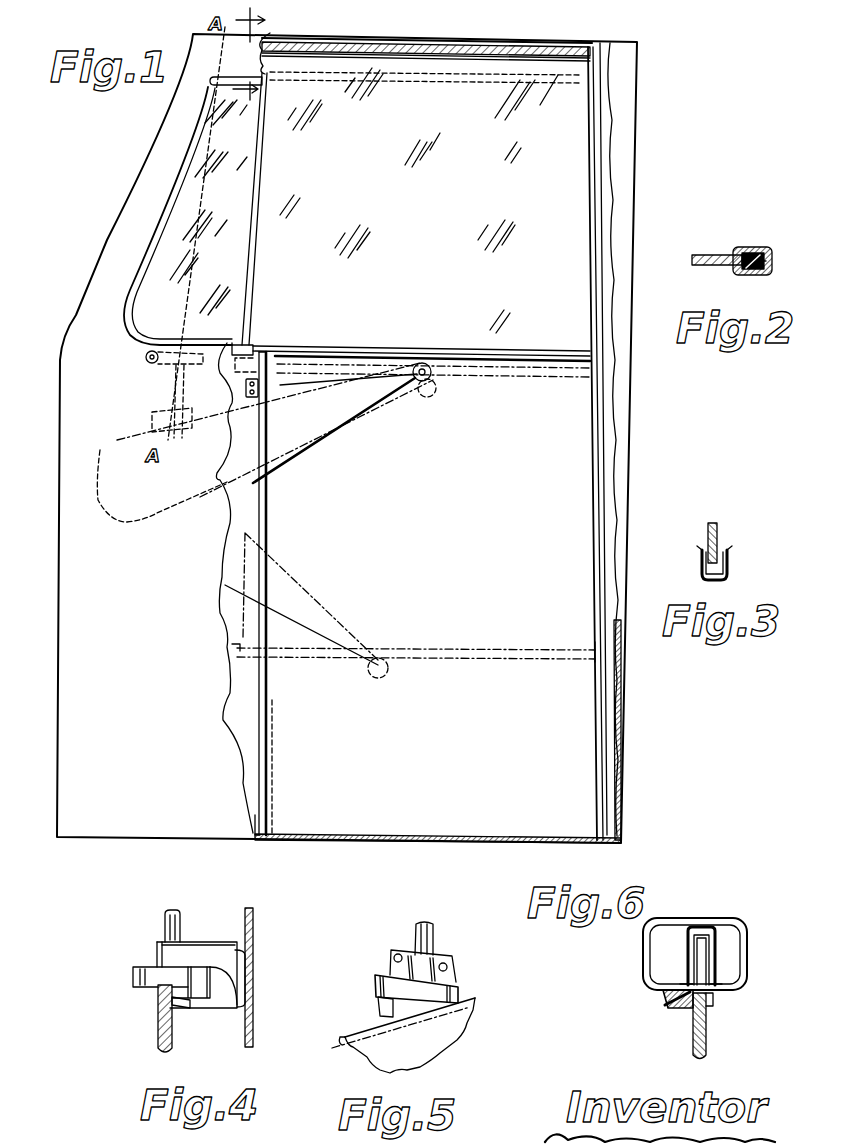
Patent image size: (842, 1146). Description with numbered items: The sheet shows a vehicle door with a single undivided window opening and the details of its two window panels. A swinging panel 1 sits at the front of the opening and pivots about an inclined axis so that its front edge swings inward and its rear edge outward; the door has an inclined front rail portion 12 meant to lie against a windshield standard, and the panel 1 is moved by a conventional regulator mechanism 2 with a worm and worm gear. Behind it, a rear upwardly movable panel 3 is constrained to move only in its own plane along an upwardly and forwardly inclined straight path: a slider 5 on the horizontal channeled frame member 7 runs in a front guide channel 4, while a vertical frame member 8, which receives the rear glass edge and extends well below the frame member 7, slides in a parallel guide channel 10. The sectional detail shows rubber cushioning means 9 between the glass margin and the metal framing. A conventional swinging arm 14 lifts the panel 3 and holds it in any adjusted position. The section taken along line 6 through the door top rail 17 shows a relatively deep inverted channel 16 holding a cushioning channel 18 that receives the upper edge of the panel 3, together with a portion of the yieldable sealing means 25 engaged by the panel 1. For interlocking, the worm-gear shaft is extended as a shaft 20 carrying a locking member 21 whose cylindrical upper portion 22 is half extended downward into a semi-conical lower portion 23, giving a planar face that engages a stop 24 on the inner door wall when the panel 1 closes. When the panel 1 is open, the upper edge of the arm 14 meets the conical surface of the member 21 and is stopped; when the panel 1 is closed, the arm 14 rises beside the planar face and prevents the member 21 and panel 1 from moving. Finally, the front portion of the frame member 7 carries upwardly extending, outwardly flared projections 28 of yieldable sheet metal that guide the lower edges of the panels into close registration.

In FIG. 1, the swinging panel 1 is at (185, 200).
In FIG. 3, the swinging panel 1 is at (708, 534).
In FIG. 6, the swinging panel 1 is at (695, 1046).
In FIG. 1, the regulator mechanism 2 is at (146, 367).
In FIG. 1, the rear upwardly movable panel 3 is at (580, 150).
In FIG. 2, the rear upwardly movable panel 3 is at (711, 255).
In FIG. 3, the rear upwardly movable panel 3 is at (702, 566).
In FIG. 6, the rear upwardly movable panel 3 is at (709, 978).
In FIG. 1, the front guide channel 4 is at (268, 724).
In FIG. 1, the slider 5 is at (270, 528).
In FIG. 1, the section line 6- 6 is at (248, 55).
In FIG. 1, the horizontal channeled frame member 7 is at (477, 372).
In FIG. 1, the vertical frame member 8 is at (598, 411).
In FIG. 2, the vertical frame member 8 is at (756, 247).
In FIG. 2, the rubber cushioning means 9 is at (768, 263).
In FIG. 1, the guide channel 10 is at (606, 705).
In FIG. 1, the inclined front rail portion 12 is at (162, 120).
In FIG. 1, the swinging arm 14 is at (318, 441).
In FIG. 4, the swinging arm 14 is at (160, 1038).
In FIG. 5, the swinging arm 14 is at (347, 1043).
In FIG. 1, the inverted channel 16 is at (455, 50).
In FIG. 6, the inverted channel 16 is at (707, 925).
In FIG. 1, the top rail 17 is at (264, 40).
In FIG. 6, the top rail 17 is at (687, 919).
In FIG. 1, the cushioning channel 18 is at (533, 52).
In FIG. 6, the cushioning channel 18 is at (690, 962).
In FIG. 1, the shaft 20 is at (180, 388).
In FIG. 4, the shaft 20 is at (178, 917).
In FIG. 5, the shaft 20 is at (417, 933).
In FIG. 1, the locking member 21 is at (150, 430).
In FIG. 4, the locking member 21 is at (138, 961).
In FIG. 5, the locking member 21 is at (374, 974).
In FIG. 4, the cylindrical upper portion 22 is at (140, 984).
In FIG. 5, the cylindrical upper portion 22 is at (453, 992).
In FIG. 4, the semi-conical lower portion 23 is at (174, 1010).
In FIG. 5, the stop 24 is at (378, 1010).
In FIG. 6, the sealing means 25 is at (663, 1000).
In FIG. 1, the outwardly flared projections 28 is at (238, 344).
In FIG. 3, the outwardly flared projections 28 is at (700, 552).